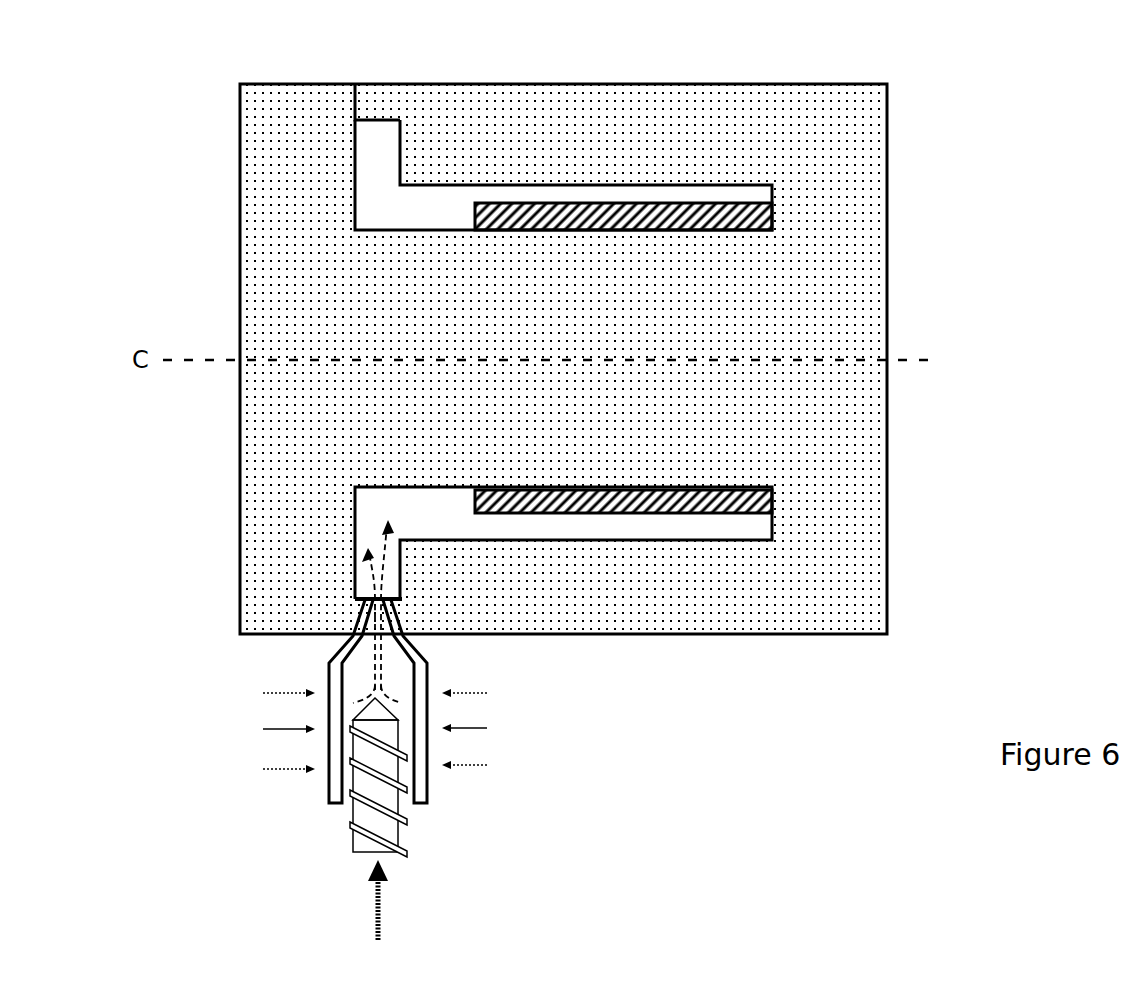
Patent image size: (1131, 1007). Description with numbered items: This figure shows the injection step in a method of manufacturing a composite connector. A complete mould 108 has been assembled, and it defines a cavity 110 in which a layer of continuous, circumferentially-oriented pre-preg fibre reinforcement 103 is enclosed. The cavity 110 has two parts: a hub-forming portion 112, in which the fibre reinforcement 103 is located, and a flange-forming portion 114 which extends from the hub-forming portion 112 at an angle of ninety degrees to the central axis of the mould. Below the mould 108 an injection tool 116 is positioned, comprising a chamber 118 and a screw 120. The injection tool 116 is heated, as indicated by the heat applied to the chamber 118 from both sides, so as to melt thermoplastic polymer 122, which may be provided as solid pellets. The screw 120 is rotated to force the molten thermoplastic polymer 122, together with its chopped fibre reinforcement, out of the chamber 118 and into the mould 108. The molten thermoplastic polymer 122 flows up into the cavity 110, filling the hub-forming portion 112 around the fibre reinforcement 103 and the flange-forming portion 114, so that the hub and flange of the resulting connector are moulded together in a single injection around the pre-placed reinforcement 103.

The pre-preg fibre reinforcement 103 is at (758, 505).
The mould 108 is at (887, 218).
The cavity 110 is at (452, 200).
The hub-forming portion 112 is at (698, 523).
The flange-forming portion 114 is at (373, 157).
The injection tool 116 is at (303, 807).
The chamber 118 is at (430, 667).
The screw 120 is at (383, 828).
The molten thermoplastic polymer 122 is at (370, 562).